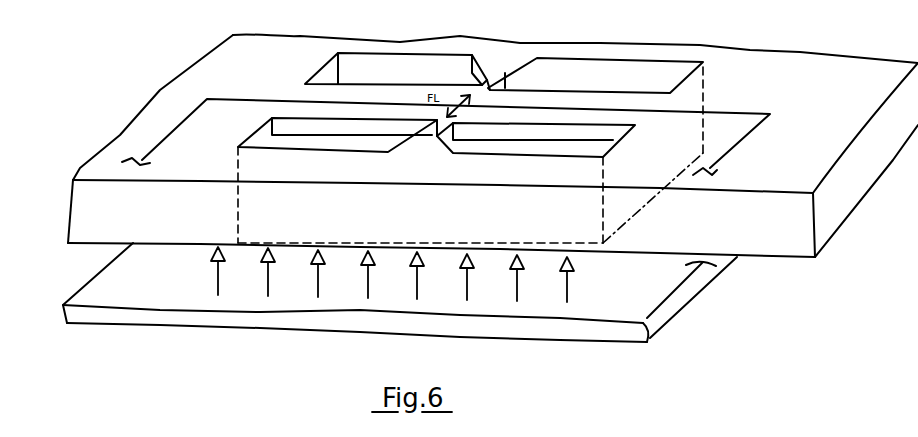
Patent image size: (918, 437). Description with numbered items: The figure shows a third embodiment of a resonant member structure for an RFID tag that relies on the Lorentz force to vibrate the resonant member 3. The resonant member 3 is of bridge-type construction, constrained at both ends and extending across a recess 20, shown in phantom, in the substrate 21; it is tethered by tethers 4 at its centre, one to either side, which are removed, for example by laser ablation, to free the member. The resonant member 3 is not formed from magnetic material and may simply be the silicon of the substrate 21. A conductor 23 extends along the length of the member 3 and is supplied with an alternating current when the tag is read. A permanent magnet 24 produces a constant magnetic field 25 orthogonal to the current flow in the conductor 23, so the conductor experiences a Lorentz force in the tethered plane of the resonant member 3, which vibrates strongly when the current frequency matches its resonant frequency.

The recess 20 is at (608, 82).
The substrate 21 is at (833, 72).
The conductor 23 is at (727, 112).
The permanent magnet 24 is at (727, 267).
The magnetic field 25 is at (573, 280).
The resonant member 3 is at (488, 119).
The tether 4 is at (484, 92).